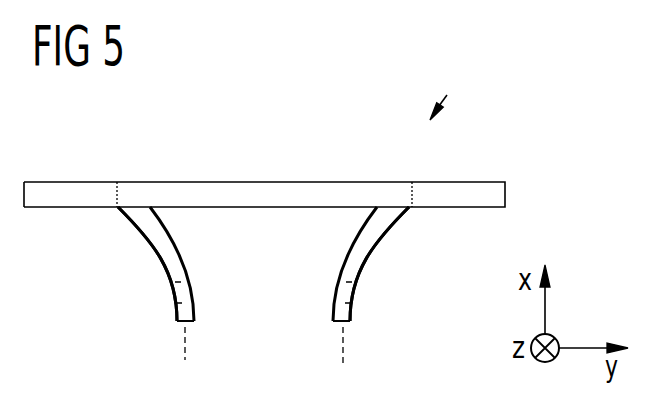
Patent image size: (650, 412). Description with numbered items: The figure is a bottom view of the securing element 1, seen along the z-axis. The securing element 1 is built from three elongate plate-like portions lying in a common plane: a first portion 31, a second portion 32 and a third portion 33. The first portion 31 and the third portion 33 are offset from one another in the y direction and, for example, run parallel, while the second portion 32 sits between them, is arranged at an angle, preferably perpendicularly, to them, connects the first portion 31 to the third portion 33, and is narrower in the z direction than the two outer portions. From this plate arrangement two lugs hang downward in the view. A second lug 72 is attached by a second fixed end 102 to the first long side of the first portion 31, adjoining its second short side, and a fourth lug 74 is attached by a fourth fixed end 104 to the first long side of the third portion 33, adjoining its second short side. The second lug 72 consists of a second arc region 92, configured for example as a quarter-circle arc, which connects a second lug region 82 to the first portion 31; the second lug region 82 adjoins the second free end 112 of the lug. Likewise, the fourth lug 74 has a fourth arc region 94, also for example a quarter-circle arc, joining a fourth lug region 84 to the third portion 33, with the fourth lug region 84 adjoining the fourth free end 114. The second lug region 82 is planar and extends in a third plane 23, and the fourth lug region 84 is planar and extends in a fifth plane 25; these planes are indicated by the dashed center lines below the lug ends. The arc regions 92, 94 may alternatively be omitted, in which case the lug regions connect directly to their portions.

The securing element 1 is at (447, 95).
The third plane 23 is at (340, 345).
The fifth plane 25 is at (187, 360).
The first portion 31 is at (478, 192).
The second portion 32 is at (267, 190).
The third portion 33 is at (75, 192).
The second lug 72 is at (348, 242).
The fourth lug 74 is at (180, 240).
The second lug region 82 is at (353, 305).
The fourth lug region 84 is at (177, 303).
The second arc region 92 is at (375, 232).
The fourth arc region 94 is at (152, 228).
The second fixed end 102 is at (412, 198).
The fourth fixed end 104 is at (118, 198).
The second free end 112 is at (350, 323).
The fourth free end 114 is at (180, 323).